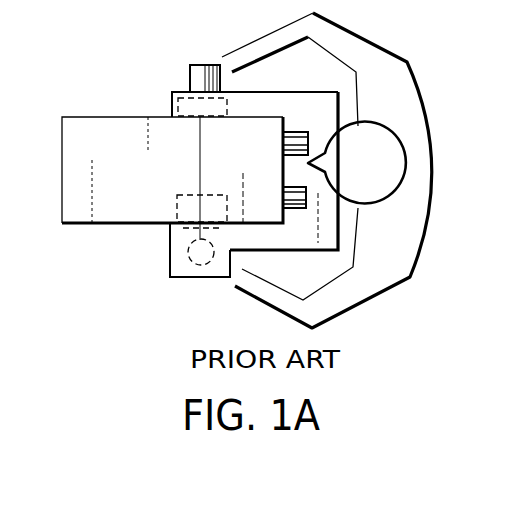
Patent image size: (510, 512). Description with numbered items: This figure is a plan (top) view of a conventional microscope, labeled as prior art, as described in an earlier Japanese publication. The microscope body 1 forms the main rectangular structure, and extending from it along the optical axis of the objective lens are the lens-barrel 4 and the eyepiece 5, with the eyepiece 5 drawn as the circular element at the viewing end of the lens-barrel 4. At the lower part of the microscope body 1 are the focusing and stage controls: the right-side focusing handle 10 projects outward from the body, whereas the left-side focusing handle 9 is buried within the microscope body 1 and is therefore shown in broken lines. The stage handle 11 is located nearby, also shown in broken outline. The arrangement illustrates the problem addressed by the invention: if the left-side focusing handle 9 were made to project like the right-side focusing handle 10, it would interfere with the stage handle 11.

The microscope body 1 is at (97, 125).
The lens-barrel 4 is at (260, 127).
The eyepiece 5 is at (297, 132).
The left-side focusing handle 9 is at (172, 212).
The right-side focusing handle 10 is at (190, 74).
The stage handle 11 is at (199, 265).